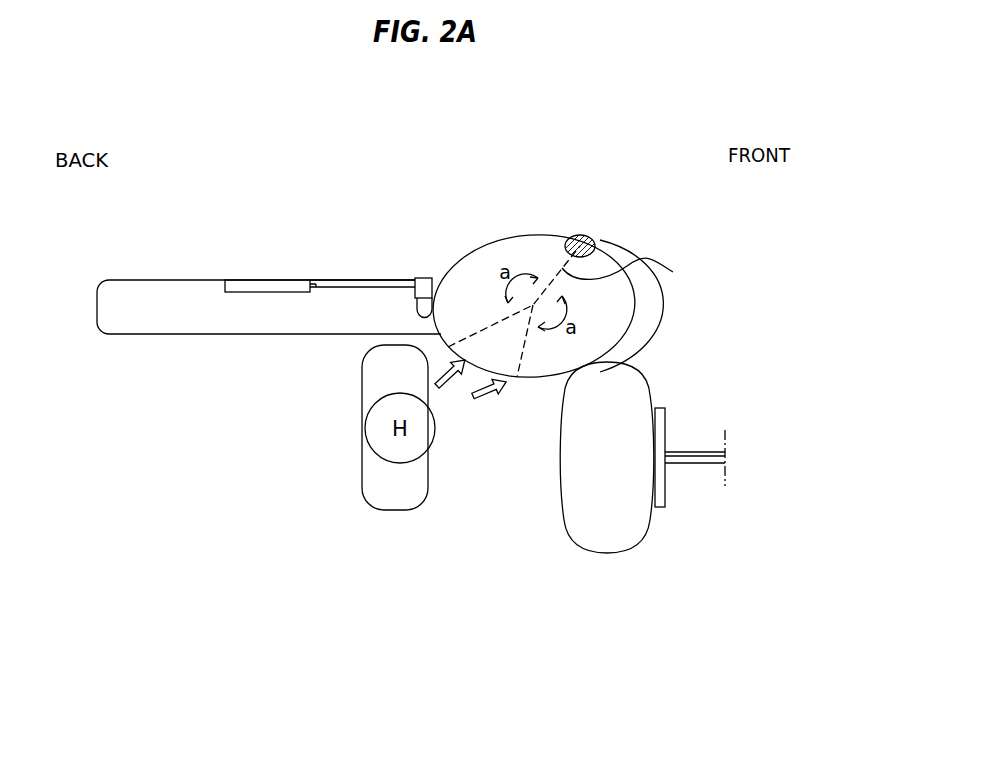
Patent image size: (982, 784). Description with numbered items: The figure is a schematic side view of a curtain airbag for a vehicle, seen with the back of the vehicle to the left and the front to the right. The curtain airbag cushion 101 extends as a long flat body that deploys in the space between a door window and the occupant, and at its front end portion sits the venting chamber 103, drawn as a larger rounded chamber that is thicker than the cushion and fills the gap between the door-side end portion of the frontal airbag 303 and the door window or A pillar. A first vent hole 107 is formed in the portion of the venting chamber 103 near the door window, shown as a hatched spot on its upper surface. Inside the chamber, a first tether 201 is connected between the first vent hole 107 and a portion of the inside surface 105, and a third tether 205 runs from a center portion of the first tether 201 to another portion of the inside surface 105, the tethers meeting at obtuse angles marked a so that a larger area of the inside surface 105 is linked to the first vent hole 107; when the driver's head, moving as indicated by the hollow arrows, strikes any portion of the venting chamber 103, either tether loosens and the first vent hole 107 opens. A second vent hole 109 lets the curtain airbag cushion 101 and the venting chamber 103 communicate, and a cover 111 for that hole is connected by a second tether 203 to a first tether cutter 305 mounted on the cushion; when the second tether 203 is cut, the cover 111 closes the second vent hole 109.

The curtain airbag cushion 101 is at (133, 280).
The venting chamber 103 is at (518, 253).
The inside surface 105 is at (628, 338).
The first vent hole 107 is at (580, 240).
The second vent hole 109 is at (421, 307).
The cover 111 is at (424, 288).
The first tether 201 is at (639, 272).
The second tether 203 is at (332, 284).
The third tether 205 is at (493, 323).
The frontal airbag 303 is at (610, 554).
The first tether cutter 305 is at (270, 283).